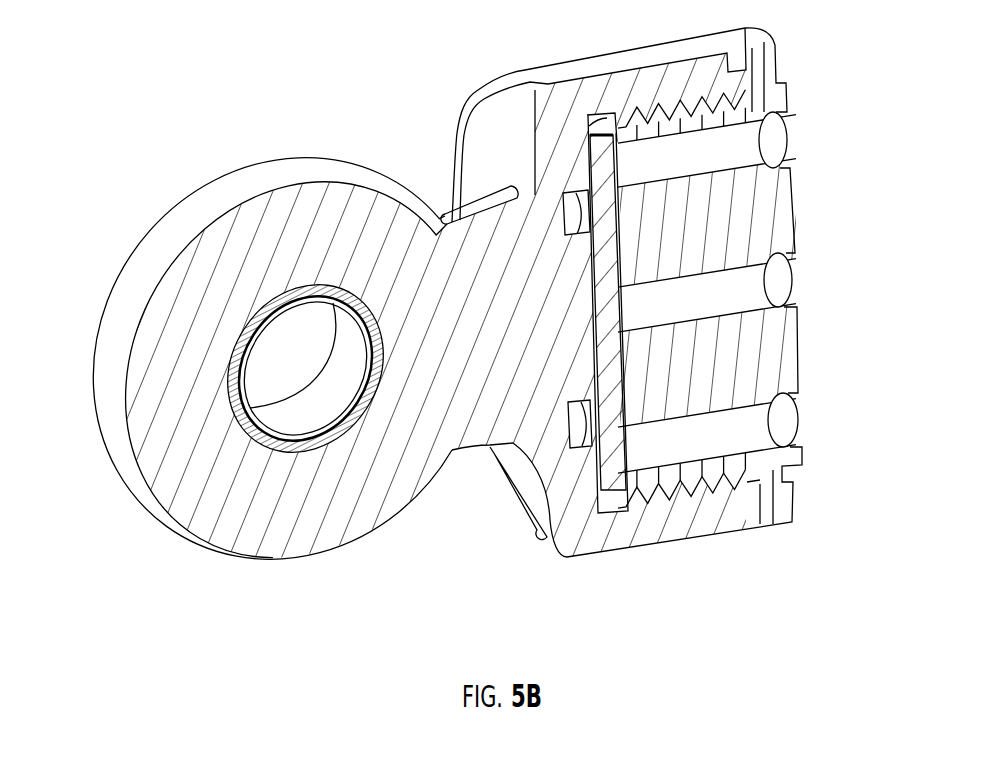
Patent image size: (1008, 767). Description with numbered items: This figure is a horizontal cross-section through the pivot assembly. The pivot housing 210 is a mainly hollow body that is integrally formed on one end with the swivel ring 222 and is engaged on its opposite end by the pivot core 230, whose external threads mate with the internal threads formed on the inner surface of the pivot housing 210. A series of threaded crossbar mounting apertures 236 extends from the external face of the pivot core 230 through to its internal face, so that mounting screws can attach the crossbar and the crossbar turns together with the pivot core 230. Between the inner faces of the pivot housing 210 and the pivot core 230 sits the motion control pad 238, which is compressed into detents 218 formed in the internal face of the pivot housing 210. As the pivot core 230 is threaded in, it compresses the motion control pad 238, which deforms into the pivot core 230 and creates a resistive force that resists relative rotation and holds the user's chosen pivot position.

The pivot housing 210 is at (568, 62).
The detents 218 is at (577, 215).
The swivel ring 222 is at (157, 227).
The pivot core 230 is at (798, 343).
The crossbar mounting apertures 236 is at (781, 135).
The motion control pad 238 is at (613, 440).